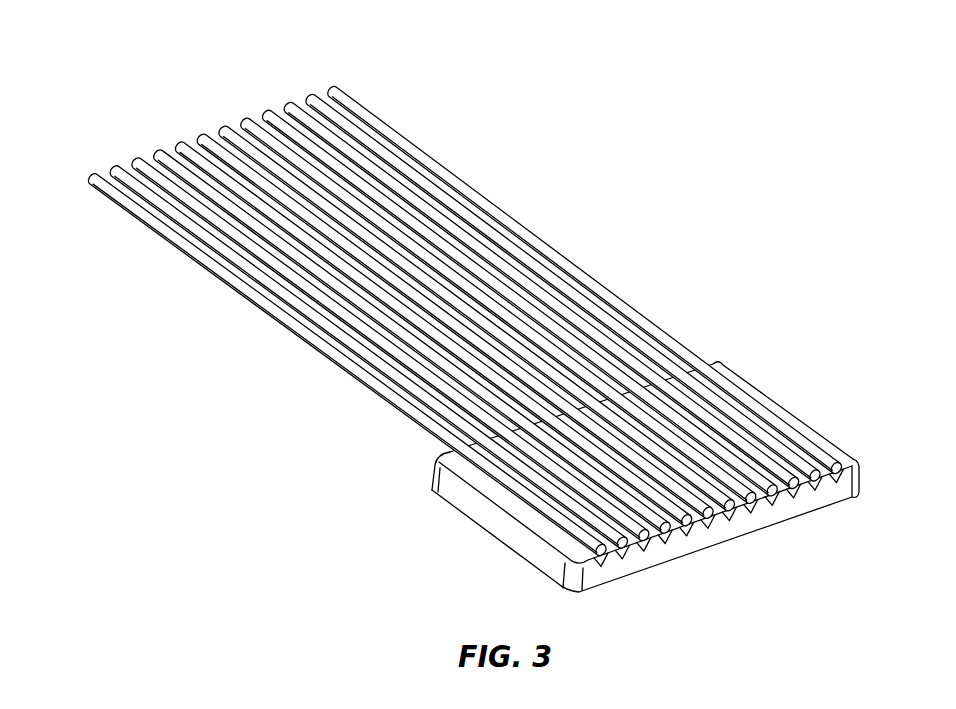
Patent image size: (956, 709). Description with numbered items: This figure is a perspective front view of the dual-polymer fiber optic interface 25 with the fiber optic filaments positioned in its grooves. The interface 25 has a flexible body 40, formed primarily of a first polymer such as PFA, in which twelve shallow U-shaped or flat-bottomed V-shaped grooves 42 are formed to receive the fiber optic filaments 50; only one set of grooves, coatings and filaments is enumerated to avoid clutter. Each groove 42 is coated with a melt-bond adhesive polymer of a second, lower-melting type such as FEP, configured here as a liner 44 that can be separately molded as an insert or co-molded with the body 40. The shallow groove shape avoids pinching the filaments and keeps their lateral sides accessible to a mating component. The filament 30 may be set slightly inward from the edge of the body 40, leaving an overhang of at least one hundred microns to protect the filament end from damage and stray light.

The dual-polymer fiber optic interface 25 is at (506, 338).
The filament 30 is at (464, 320).
The flexible body 40 is at (679, 464).
The grooves 42 is at (855, 491).
The liners 44 is at (845, 475).
The fiber optic filaments 50 is at (648, 328).